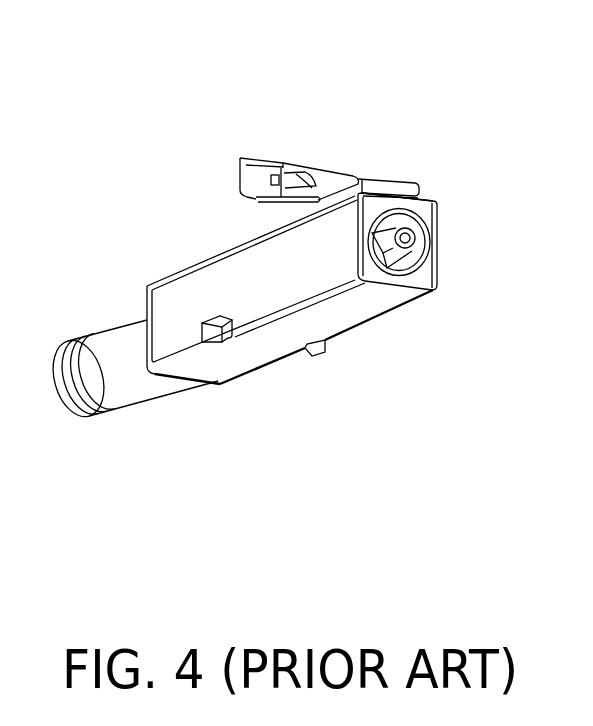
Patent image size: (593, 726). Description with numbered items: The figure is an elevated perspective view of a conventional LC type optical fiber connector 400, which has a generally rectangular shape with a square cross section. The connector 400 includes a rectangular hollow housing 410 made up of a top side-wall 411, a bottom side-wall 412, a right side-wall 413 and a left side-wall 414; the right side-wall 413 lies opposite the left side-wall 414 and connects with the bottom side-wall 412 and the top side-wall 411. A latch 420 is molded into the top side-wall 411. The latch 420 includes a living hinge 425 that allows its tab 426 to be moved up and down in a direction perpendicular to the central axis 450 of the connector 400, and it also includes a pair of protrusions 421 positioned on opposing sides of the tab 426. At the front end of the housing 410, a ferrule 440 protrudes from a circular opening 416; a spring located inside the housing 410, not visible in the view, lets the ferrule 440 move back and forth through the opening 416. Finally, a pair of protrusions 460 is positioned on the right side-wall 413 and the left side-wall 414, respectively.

The LC type optical fiber connector 400 is at (94, 113).
The housing 410 is at (338, 365).
The top side-wall 411 is at (416, 193).
The bottom side-wall 412 is at (363, 303).
The right side-wall 413 is at (432, 267).
The left side-wall 414 is at (278, 267).
The circular opening 416 is at (414, 258).
The latch 420 is at (252, 135).
The protrusions 421 is at (285, 165).
The living hinge 425 is at (387, 183).
The tab 426 is at (252, 180).
The ferrule 440 is at (383, 250).
The central axis 450 is at (37, 403).
The protrusions 460 is at (305, 352).